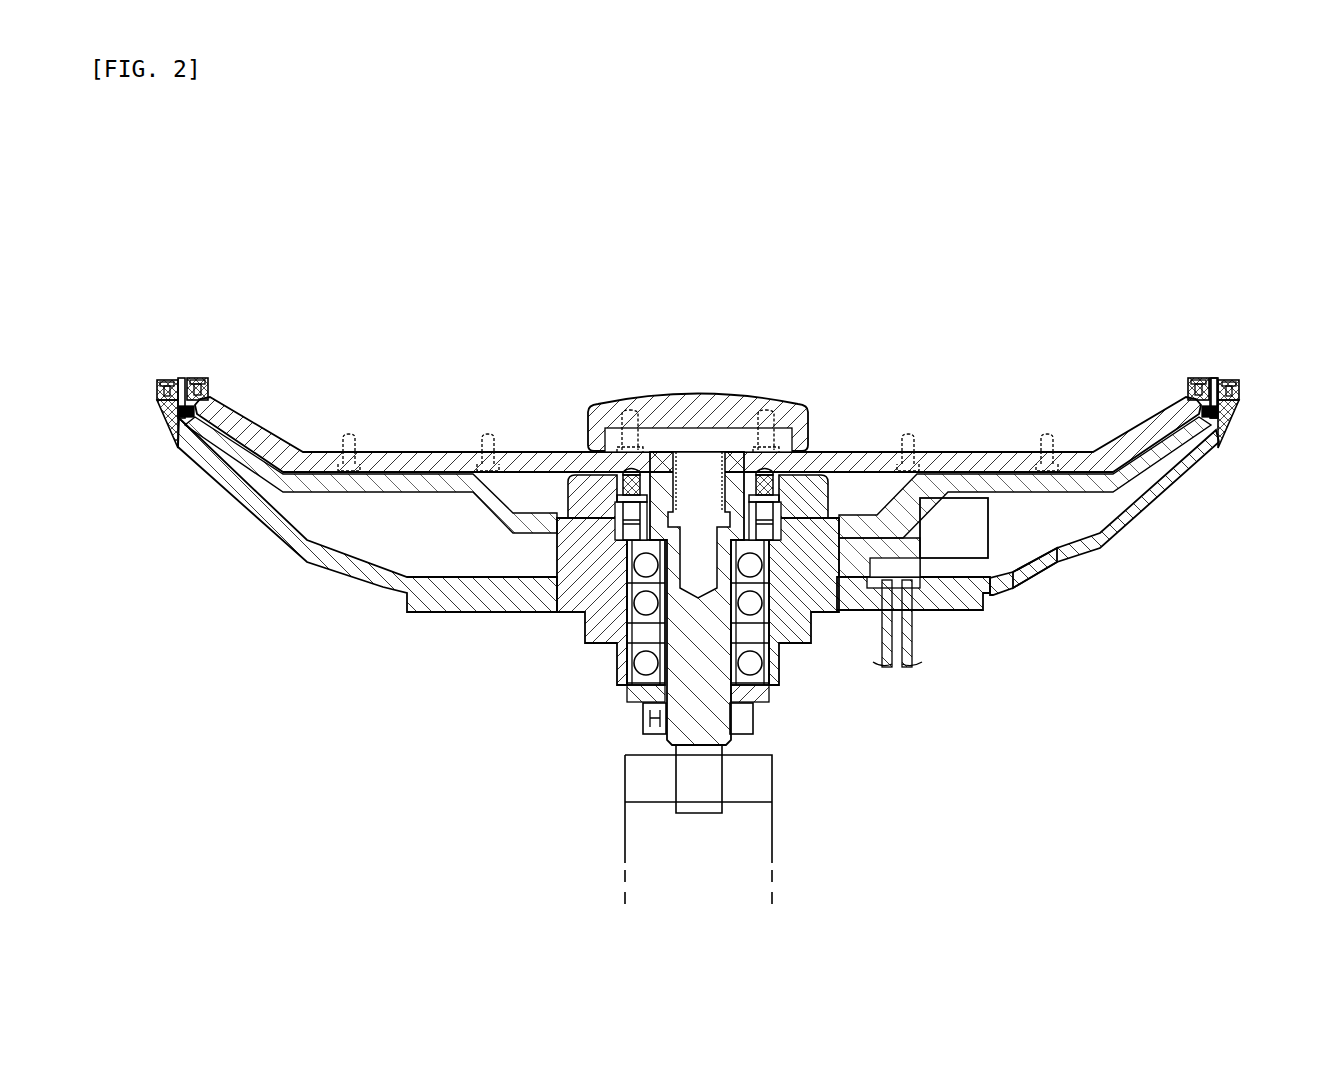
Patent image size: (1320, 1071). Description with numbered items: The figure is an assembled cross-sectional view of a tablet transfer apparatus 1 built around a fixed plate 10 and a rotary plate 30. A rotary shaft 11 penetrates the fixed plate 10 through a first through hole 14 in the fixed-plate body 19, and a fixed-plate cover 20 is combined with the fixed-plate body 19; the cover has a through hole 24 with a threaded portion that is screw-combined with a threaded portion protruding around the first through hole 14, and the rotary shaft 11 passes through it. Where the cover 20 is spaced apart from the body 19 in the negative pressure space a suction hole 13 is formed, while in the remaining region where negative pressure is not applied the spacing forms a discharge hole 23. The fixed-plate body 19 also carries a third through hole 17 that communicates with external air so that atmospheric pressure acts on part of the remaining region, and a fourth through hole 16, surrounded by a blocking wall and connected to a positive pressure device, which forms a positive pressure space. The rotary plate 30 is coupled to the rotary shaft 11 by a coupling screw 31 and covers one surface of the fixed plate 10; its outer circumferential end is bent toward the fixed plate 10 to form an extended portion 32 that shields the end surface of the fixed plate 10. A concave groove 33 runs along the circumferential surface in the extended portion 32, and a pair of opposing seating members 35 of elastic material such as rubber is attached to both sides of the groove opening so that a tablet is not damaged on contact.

The tablet transfer apparatus 1 is at (244, 272).
The fixed plate 10 is at (1250, 495).
The rotary shaft 11 is at (690, 707).
The suction hole 13 is at (203, 470).
The first through hole 14 is at (605, 612).
The fourth through hole 16 is at (945, 525).
The third through hole 17 is at (1053, 548).
The fixed-plate body 19 is at (1100, 543).
The fixed-plate cover 20 is at (1050, 486).
The discharge hole 23 is at (1220, 415).
The through hole 24 is at (577, 486).
The rotary plate 30 is at (958, 452).
The coupling screw 31 is at (708, 388).
The extended portion 32 is at (160, 415).
The concave groove 33 is at (1214, 378).
The seating members 35 is at (1197, 379).